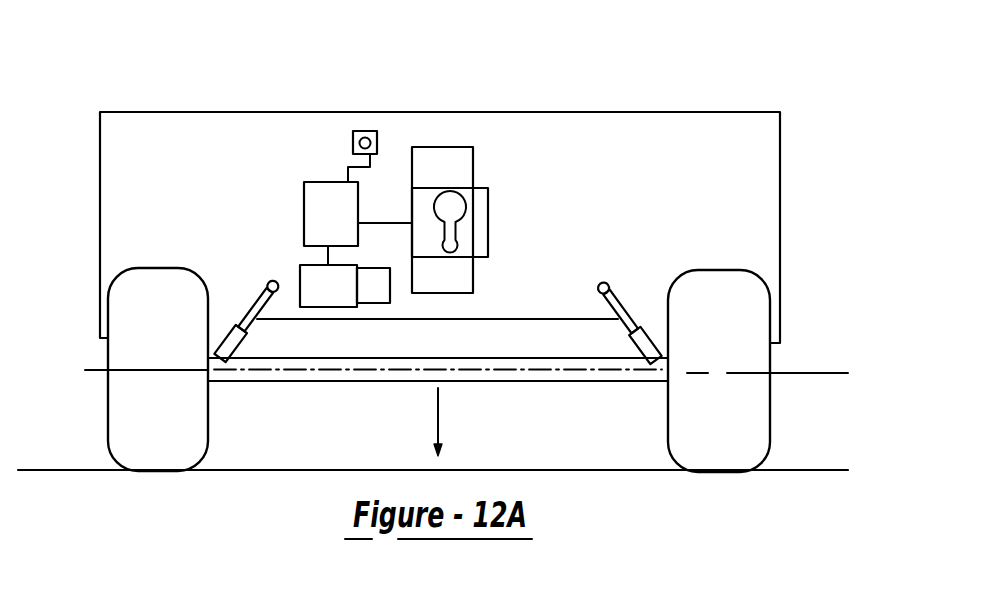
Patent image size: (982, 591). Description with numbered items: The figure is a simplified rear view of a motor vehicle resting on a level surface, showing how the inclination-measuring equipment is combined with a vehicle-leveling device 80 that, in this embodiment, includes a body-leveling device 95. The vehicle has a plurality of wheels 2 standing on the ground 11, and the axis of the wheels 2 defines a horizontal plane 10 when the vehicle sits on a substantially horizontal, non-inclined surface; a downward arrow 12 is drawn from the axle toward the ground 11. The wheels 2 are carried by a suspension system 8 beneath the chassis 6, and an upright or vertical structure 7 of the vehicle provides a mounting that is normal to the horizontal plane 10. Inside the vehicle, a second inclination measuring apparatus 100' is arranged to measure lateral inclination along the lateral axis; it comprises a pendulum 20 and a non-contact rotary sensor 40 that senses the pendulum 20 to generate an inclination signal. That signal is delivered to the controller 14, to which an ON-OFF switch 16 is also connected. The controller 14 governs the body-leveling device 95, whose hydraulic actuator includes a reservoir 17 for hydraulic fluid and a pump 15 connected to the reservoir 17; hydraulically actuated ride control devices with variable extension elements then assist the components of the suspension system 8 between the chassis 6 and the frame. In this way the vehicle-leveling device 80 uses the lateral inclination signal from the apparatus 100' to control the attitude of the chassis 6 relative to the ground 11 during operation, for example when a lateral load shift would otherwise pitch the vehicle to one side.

The vehicle-leveling device 80 is at (206, 62).
The body-leveling device 95 is at (767, 92).
The chassis 6 is at (782, 212).
The second inclination measuring apparatus 100' is at (459, 195).
The wheels 2 is at (108, 412).
The suspension system 8 is at (250, 310).
The horizontal plane 10 is at (840, 370).
The ground 11 is at (797, 455).
The downward direction 12 is at (452, 424).
The controller 14 is at (331, 182).
The pump 15 is at (300, 273).
The ON-OFF switch 16 is at (360, 131).
The reservoir 17 is at (381, 297).
The pendulum 20 is at (437, 137).
The non-contact rotary sensor 40 is at (497, 207).
The upright or vertical structure 7 is at (473, 280).